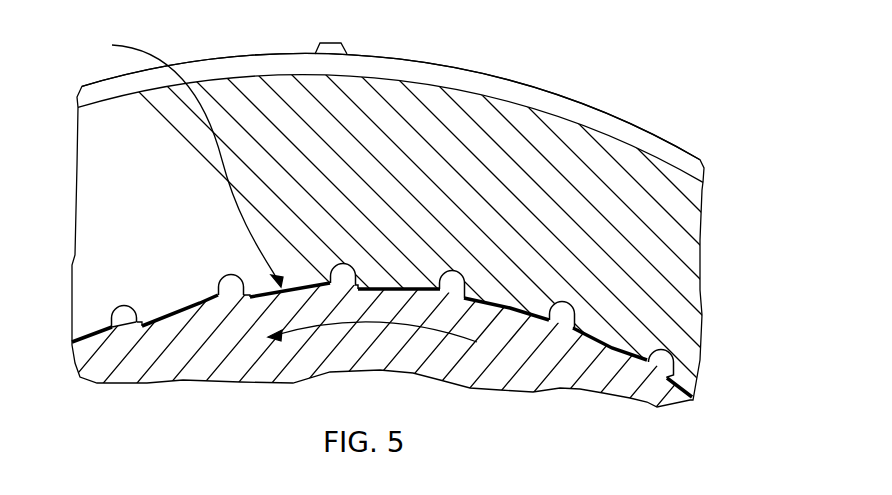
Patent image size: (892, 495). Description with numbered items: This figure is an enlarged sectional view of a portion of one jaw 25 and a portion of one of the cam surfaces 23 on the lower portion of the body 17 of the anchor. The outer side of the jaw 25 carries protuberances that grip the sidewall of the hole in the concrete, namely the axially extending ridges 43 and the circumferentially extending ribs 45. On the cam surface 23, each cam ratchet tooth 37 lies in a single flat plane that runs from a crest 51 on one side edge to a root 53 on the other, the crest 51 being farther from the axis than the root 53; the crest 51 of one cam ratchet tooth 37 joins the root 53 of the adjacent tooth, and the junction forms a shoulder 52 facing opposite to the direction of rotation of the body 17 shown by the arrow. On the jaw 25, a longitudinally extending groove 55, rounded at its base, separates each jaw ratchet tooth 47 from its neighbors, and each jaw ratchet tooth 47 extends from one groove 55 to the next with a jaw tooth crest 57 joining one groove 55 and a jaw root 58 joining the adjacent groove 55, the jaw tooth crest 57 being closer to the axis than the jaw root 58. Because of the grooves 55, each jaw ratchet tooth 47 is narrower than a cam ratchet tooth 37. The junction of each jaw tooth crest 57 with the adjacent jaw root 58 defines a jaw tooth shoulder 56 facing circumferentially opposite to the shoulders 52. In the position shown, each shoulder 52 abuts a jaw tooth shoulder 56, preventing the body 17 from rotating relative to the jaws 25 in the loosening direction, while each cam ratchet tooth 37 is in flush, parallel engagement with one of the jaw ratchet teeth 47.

The body 17 is at (303, 367).
The cam surfaces 23 is at (185, 161).
The jaw 25 is at (557, 118).
The cam ratchet tooth 37 is at (157, 318).
The axially extending ridges 43 is at (346, 48).
The circumferentially extending ribs 45 is at (467, 77).
The jaw ratchet tooth 47 is at (612, 349).
The crest 51 is at (127, 306).
The shoulder 52 is at (670, 377).
The root 53 is at (574, 327).
The groove 55 is at (572, 313).
The jaw tooth shoulder 56 is at (240, 295).
The jaw tooth crest 57 is at (257, 297).
The jaw root 58 is at (128, 324).